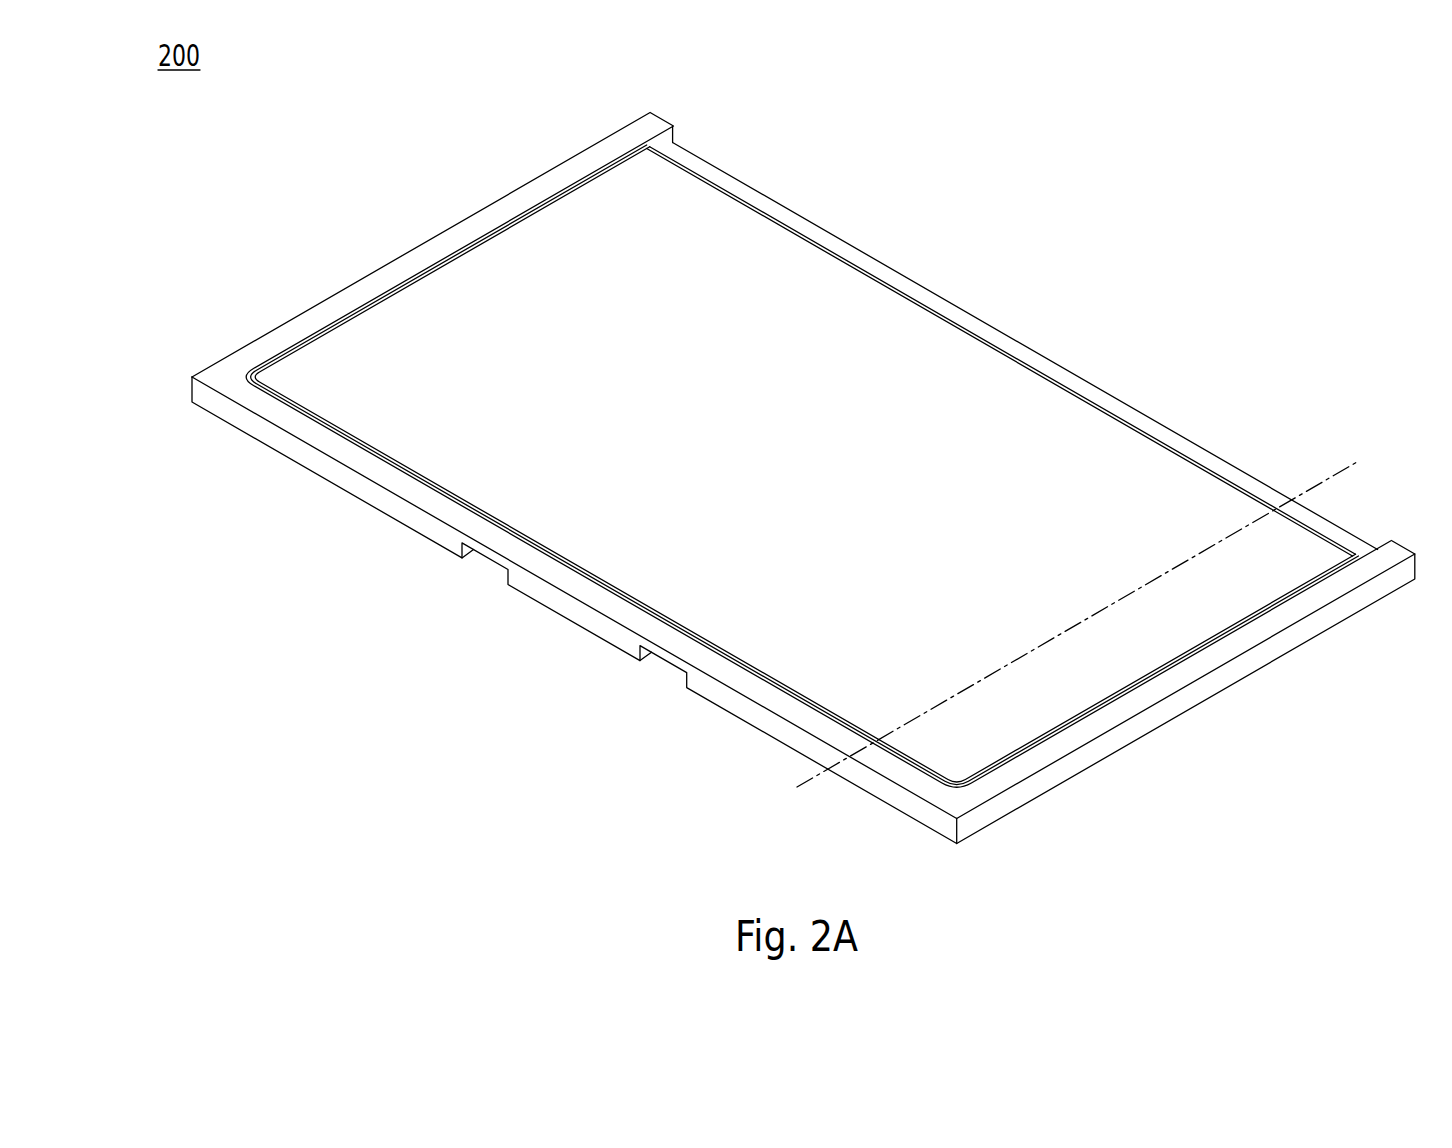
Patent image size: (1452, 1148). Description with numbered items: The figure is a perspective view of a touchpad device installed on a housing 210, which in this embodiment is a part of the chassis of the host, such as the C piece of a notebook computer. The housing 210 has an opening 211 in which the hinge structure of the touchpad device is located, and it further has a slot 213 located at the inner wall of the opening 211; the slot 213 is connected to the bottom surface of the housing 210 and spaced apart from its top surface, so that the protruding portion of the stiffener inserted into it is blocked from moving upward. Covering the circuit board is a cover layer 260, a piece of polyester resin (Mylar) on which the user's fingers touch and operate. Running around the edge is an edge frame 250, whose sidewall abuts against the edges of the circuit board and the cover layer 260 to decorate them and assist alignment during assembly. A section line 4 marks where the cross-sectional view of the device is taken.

The housing 210 is at (276, 330).
The opening 211 is at (398, 287).
The slot 213 is at (492, 565).
The edge frame 250 is at (983, 338).
The cover layer 260 is at (762, 247).
The line 4- 4 is at (1366, 463).